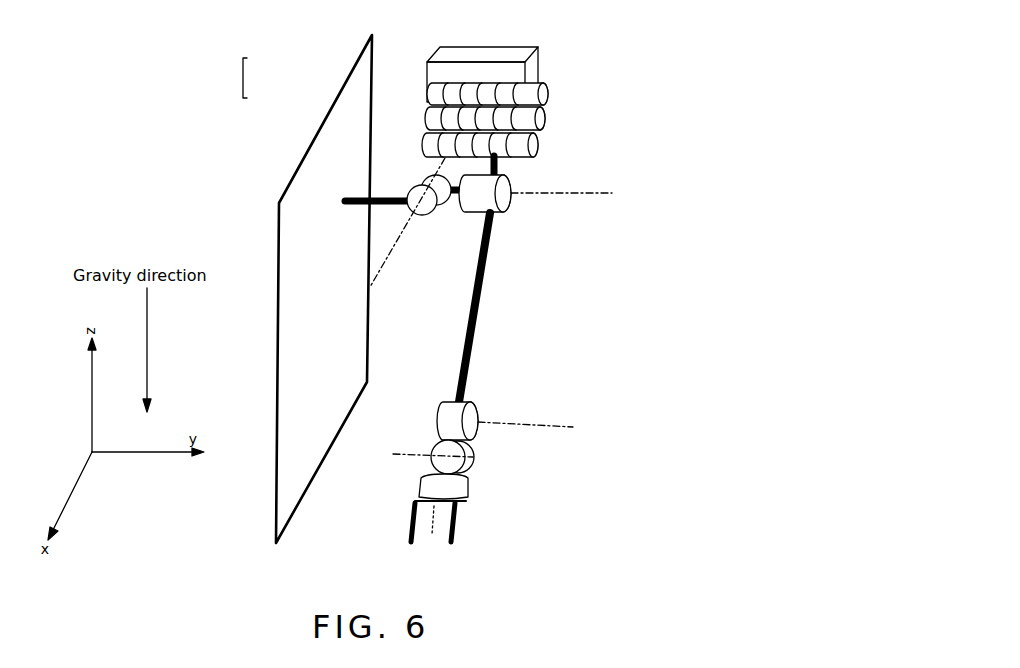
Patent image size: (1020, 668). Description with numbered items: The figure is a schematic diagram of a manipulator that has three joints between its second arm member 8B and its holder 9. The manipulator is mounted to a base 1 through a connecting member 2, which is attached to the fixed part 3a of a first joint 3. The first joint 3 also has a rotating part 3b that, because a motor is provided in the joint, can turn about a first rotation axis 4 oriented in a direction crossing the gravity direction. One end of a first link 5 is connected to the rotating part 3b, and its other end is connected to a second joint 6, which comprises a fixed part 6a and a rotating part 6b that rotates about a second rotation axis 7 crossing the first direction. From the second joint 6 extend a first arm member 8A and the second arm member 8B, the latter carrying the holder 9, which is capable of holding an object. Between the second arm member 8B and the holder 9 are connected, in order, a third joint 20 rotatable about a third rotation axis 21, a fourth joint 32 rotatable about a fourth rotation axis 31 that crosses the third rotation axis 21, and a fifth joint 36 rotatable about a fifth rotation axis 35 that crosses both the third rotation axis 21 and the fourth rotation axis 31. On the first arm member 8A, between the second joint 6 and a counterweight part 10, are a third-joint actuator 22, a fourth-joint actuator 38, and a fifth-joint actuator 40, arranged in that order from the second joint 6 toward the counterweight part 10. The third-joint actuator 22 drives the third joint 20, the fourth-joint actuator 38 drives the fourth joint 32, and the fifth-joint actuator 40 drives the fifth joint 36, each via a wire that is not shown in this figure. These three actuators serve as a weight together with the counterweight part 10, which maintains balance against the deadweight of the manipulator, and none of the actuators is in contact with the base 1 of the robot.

The base 1 is at (297, 193).
The connecting member 2 is at (350, 182).
The first joint 3 is at (234, 78).
The fixed part 3a is at (412, 197).
The rotating part 3b is at (422, 178).
The first rotation axis 4 is at (385, 247).
The first link 5 is at (455, 208).
The second joint 6 is at (534, 213).
The fixed part 6a is at (493, 213).
The rotating part 6b is at (480, 203).
The second rotation axis 7 is at (618, 193).
The first arm member 8A is at (503, 168).
The second arm member 8B is at (488, 270).
The holder 9 is at (499, 538).
The counterweight part 10 is at (545, 78).
The third joint 20 is at (480, 404).
The third rotation axis 21 is at (578, 427).
The third-joint actuator 22 is at (540, 147).
The fourth rotation axis 31 is at (462, 452).
The fourth joint 32 is at (470, 466).
The fifth rotation axis 35 is at (436, 535).
The fifth joint 36 is at (460, 487).
The fourth-joint actuator 38 is at (548, 122).
The fifth-joint actuator 40 is at (552, 100).